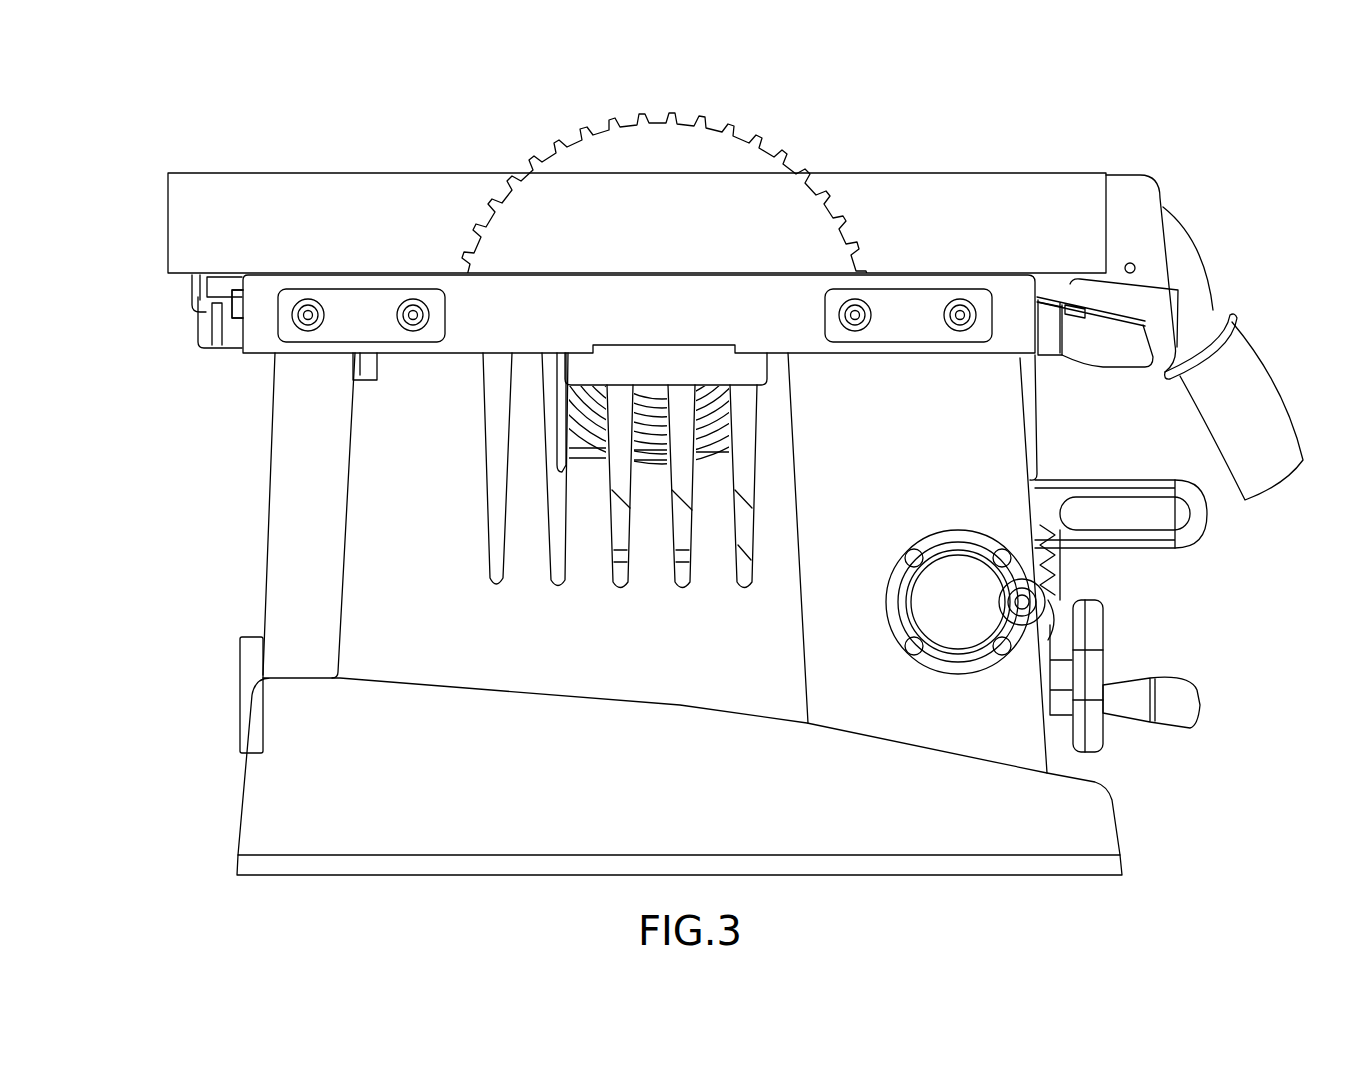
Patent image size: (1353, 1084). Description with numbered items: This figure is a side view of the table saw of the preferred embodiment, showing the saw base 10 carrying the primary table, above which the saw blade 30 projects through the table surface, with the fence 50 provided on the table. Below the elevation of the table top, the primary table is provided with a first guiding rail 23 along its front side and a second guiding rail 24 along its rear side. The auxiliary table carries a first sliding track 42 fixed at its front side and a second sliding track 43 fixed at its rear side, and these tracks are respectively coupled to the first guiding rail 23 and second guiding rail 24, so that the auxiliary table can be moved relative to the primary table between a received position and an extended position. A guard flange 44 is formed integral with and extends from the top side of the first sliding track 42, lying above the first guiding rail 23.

The saw base 10 is at (292, 548).
The first guiding rail 23 is at (1048, 368).
The second guiding rail 24 is at (235, 345).
The saw blade 30 is at (583, 193).
The first sliding track 42 is at (1118, 357).
The second sliding track 43 is at (210, 322).
The guard flange 44 is at (1050, 298).
The fence 50 is at (1015, 172).